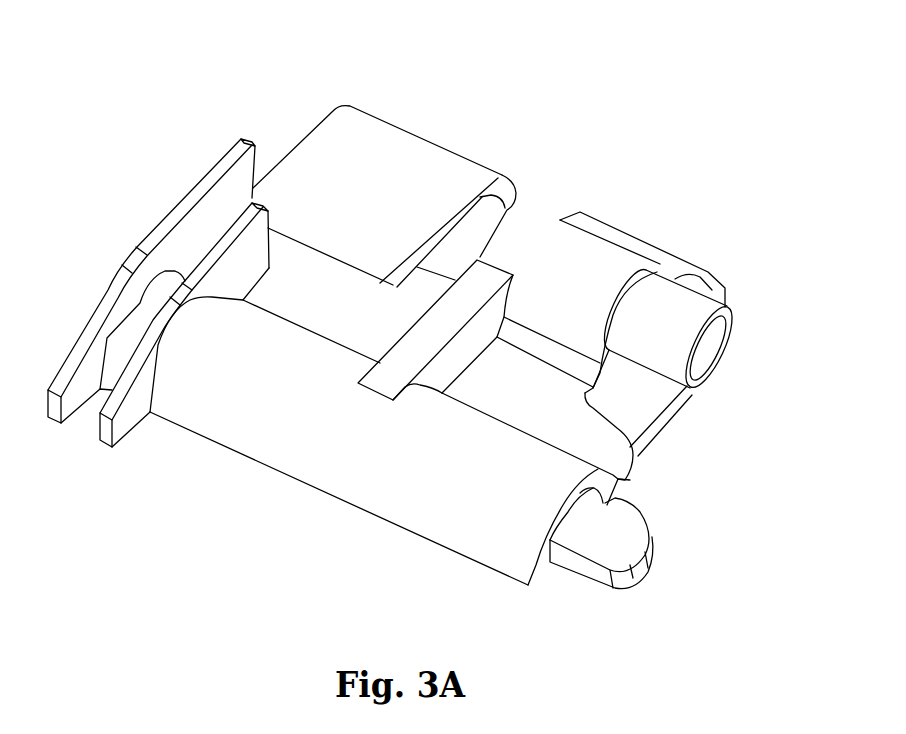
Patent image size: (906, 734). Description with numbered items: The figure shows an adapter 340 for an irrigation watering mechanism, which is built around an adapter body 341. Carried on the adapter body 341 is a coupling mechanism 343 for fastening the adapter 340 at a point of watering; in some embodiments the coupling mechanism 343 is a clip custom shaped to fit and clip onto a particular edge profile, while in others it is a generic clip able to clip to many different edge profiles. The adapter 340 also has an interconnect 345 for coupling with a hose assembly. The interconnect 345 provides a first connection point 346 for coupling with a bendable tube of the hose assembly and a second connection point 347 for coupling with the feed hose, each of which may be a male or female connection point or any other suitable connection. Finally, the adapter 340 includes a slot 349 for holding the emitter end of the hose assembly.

The adapter 340 is at (88, 84).
The adapter body 341 is at (452, 147).
The coupling mechanism 343 is at (610, 588).
The interconnect 345 is at (632, 232).
The first connection point 346 is at (484, 205).
The second connection point 347 is at (728, 328).
The slot 349 is at (85, 425).